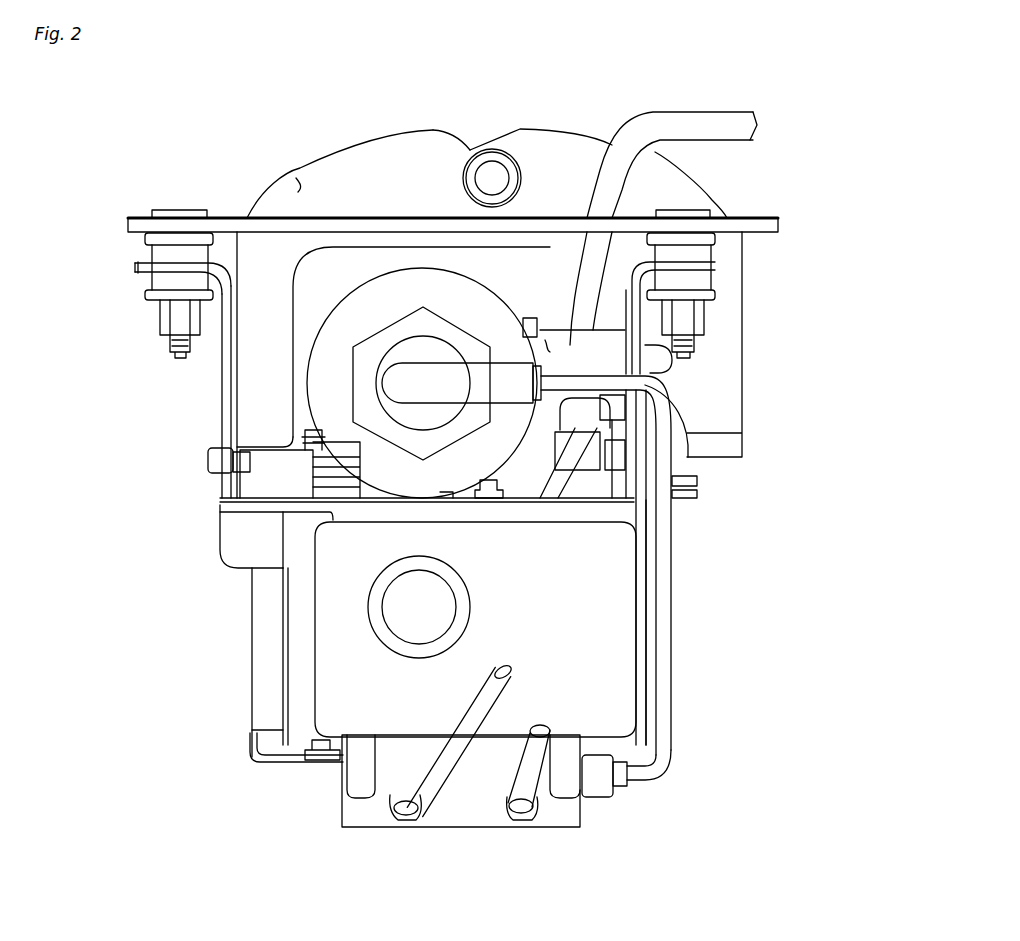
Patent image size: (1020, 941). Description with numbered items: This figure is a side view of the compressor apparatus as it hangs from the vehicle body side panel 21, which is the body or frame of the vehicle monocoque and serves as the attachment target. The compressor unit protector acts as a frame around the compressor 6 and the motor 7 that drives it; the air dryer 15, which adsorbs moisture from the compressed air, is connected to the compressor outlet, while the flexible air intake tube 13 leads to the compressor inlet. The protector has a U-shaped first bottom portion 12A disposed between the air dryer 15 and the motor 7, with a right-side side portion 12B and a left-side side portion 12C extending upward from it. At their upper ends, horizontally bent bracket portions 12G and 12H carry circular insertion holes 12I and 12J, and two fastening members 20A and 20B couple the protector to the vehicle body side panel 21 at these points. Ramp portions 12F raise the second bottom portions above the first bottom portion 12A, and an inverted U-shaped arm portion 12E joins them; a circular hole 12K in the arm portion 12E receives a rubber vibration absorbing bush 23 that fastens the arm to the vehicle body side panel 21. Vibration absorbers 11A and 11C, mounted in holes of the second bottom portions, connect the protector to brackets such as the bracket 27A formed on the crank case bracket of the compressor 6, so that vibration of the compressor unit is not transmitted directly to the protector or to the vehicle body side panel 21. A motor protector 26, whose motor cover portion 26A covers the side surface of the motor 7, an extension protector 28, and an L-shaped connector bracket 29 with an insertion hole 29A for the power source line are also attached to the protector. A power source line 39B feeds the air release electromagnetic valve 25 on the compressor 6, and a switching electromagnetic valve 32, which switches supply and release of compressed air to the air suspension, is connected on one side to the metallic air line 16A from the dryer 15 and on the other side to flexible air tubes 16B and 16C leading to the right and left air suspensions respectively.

The compressor 6 is at (498, 490).
The motor 7 is at (340, 500).
The vibration absorber 11A is at (685, 480).
The vibration absorber 11C is at (320, 485).
The first bottom portion 12A is at (335, 522).
The right-side side portion 12B is at (660, 385).
The left-side side portion 12C is at (228, 372).
The arm portion 12E is at (300, 183).
The ramp portion 12F is at (545, 497).
The bracket portion 12G is at (716, 265).
The bracket portion 12H is at (143, 268).
The insertion hole 12I is at (718, 286).
The insertion hole 12J is at (137, 274).
The circular hole 12K is at (468, 147).
The flexible air intake tube 13 is at (731, 111).
The air dryer 15 is at (333, 405).
The metallic air line 16A is at (662, 748).
The flexible air tube 16B is at (405, 808).
The flexible air tube 16C is at (528, 797).
The fastening member 20A is at (150, 251).
The fastening member 20B is at (713, 257).
The vehicle body side panel 21 is at (132, 228).
The vibration absorbing bush 23 is at (490, 180).
The air release electromagnetic valve 25 is at (547, 345).
The motor protector 26 is at (267, 660).
The motor cover portion 26A is at (645, 688).
The bracket 27A is at (297, 573).
The extension protector 28 is at (250, 742).
The connector bracket 29 is at (340, 707).
The insertion hole 29A is at (377, 600).
The switching electromagnetic valve 32 is at (358, 820).
The power source line 39B is at (595, 475).